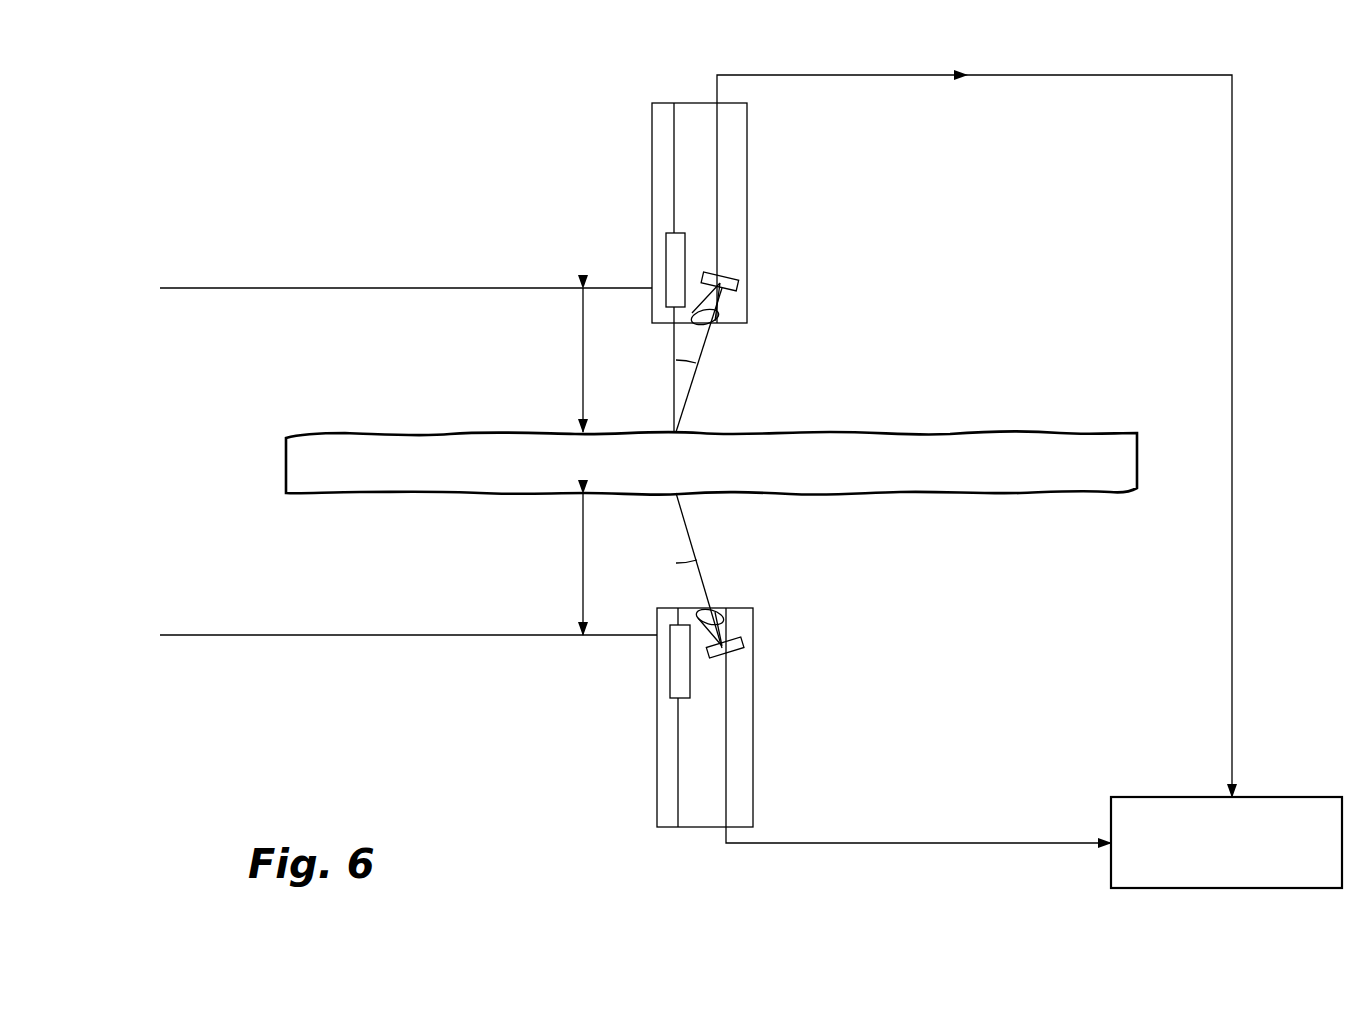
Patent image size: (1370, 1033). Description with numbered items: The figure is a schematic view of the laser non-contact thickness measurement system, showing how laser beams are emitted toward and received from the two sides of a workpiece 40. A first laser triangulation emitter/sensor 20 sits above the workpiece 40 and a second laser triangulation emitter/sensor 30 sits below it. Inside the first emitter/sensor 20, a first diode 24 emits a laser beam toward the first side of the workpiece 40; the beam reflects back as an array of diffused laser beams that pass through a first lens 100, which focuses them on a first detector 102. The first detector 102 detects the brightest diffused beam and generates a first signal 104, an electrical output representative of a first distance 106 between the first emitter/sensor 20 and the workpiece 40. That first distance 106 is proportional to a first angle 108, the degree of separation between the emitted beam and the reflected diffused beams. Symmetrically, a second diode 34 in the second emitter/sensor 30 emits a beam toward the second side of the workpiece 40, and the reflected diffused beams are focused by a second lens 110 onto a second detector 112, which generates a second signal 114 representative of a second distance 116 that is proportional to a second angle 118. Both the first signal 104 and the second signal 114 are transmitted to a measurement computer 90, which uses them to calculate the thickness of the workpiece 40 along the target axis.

The first laser triangulation emitter/sensor 20 is at (652, 125).
The first diode 24 is at (666, 248).
The second laser triangulation emitter/sensor 30 is at (657, 771).
The second diode 34 is at (670, 677).
The workpiece 40 is at (286, 451).
The measurement computer 90 is at (1290, 797).
The first lens 100 is at (721, 306).
The first detector 102 is at (740, 269).
The first signal 104 is at (768, 75).
The first distance 106 is at (674, 371).
The first angle 108 is at (698, 352).
The second lens 110 is at (727, 622).
The second detector 112 is at (744, 659).
The second signal 114 is at (838, 843).
The second distance 116 is at (675, 546).
The second angle 118 is at (690, 567).